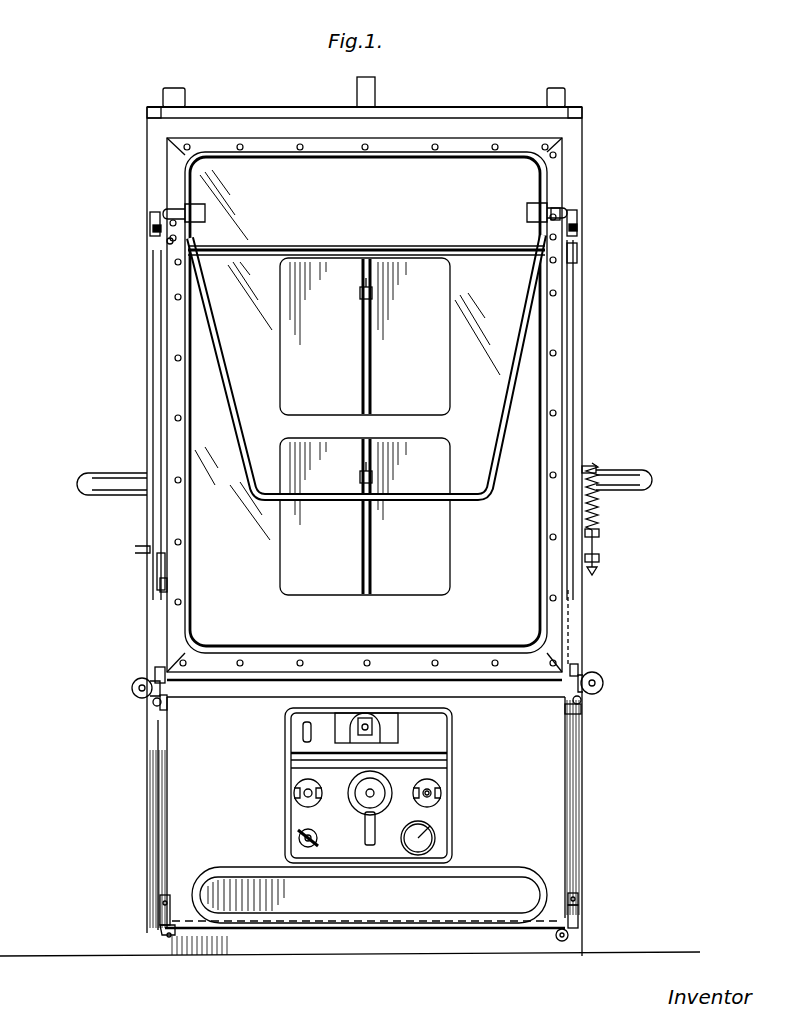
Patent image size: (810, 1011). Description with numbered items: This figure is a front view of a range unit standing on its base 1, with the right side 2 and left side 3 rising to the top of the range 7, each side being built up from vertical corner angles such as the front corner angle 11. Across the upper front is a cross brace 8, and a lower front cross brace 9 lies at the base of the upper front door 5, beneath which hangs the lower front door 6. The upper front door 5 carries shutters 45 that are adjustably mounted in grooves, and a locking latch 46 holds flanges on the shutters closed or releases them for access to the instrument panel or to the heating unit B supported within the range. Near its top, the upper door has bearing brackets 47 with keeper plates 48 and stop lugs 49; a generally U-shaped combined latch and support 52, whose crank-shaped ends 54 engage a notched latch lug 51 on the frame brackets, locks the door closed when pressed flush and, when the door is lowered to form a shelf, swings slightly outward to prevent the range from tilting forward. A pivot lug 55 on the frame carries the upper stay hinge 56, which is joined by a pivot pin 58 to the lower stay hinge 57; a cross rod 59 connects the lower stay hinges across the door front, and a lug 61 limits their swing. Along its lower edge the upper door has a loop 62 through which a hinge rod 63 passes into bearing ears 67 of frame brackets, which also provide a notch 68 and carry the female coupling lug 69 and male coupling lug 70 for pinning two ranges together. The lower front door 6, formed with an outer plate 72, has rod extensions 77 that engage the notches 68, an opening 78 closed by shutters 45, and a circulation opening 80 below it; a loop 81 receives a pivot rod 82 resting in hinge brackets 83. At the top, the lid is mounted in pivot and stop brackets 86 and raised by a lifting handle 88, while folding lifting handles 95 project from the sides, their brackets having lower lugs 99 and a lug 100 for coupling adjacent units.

The base 1 is at (577, 950).
The right side 2 is at (577, 356).
The left side 3 is at (150, 403).
The upper front door 5 is at (520, 178).
The lower front door 6 is at (545, 790).
The top of the range 7 is at (478, 108).
The cross brace 8 is at (297, 128).
The lower front cross brace 9 is at (250, 690).
The vertical front corner angle 11 is at (158, 745).
The shutters 45 is at (470, 742).
The locking latch 46 is at (360, 293).
The bearing brackets 47 is at (556, 212).
The keeper plates 48 is at (166, 242).
The stop lugs 49 is at (203, 212).
The notched latch lug 51 is at (150, 217).
The combined latch and support 52 is at (497, 462).
The crank-shaped ends 54 is at (152, 229).
The pivot lug 55 is at (582, 253).
The upper stay hinge 56 is at (152, 289).
The lower stay hinge 57 is at (163, 344).
The pivot pin 58 is at (157, 560).
The cross rod 59 is at (426, 252).
The lug 61 is at (160, 588).
The loop 62 is at (560, 672).
The hinge rod 63 is at (576, 676).
The bearing ears 67 is at (157, 670).
The notch 68 is at (583, 712).
The female coupling lug 69 is at (604, 683).
The male coupling lug 70 is at (132, 688).
The outer plate 72 is at (166, 800).
The extensions 77 is at (153, 703).
The opening 78 is at (445, 784).
The circulation opening 80 is at (250, 878).
The loop 81 is at (578, 900).
The pivot rod 82 is at (300, 935).
The hinge brackets 83 is at (158, 920).
The pivot and stop brackets 86 is at (160, 107).
The lifting handle 88 is at (376, 88).
The folding lifting handles 95 is at (85, 476).
The lower lugs 99 is at (600, 533).
The lug 100 is at (135, 549).
The heating unit B is at (420, 718).